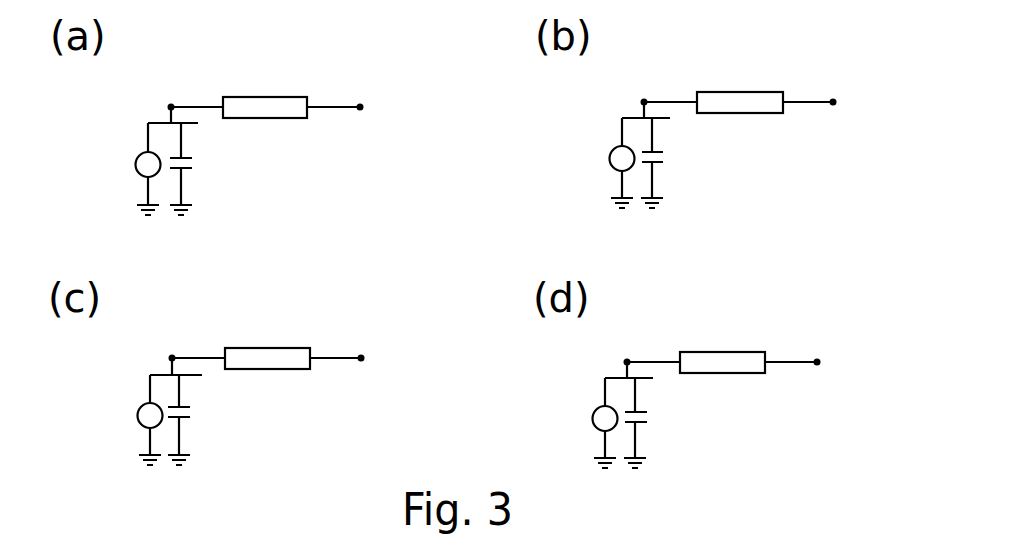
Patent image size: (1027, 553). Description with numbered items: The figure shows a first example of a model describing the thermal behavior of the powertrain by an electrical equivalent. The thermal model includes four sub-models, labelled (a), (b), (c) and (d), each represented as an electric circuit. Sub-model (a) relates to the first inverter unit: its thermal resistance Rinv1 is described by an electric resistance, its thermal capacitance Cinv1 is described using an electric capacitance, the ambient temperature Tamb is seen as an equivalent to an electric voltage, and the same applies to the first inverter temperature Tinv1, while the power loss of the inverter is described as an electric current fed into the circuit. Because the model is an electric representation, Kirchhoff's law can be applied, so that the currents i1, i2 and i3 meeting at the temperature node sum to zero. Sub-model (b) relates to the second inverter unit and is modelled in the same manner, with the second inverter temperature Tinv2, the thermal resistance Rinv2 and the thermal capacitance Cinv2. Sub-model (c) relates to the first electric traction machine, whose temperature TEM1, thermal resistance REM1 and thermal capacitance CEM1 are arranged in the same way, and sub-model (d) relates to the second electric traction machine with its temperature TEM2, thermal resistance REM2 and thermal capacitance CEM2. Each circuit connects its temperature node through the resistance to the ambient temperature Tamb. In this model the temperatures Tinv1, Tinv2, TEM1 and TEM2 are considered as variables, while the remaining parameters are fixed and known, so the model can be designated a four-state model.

The first inverter temperature Tinv1 is at (171, 107).
The thermal resistance of the first inverter unit Rinv1 is at (263, 97).
The thermal capacitance of the first inverter unit Cinv1 is at (205, 165).
The second inverter temperature Tinv2 is at (644, 102).
The thermal resistance of the second inverter unit Rinv2 is at (733, 92).
The thermal capacitance of the second inverter unit Cinv2 is at (675, 158).
The first electric traction machine temperature TEM1 is at (172, 358).
The thermal resistance of the first electric traction machine REM1 is at (267, 348).
The thermal capacitance of the first electric traction machine CEM1 is at (206, 413).
The second electric traction machine temperature TEM2 is at (627, 362).
The thermal resistance of the second electric traction machine REM2 is at (720, 352).
The thermal capacitance of the second electric traction machine CEM2 is at (661, 414).
The first current i1 is at (593, 403).
The second current i2 is at (191, 134).
The third current i3 is at (658, 348).
The ambient temperature Tamb is at (360, 107).